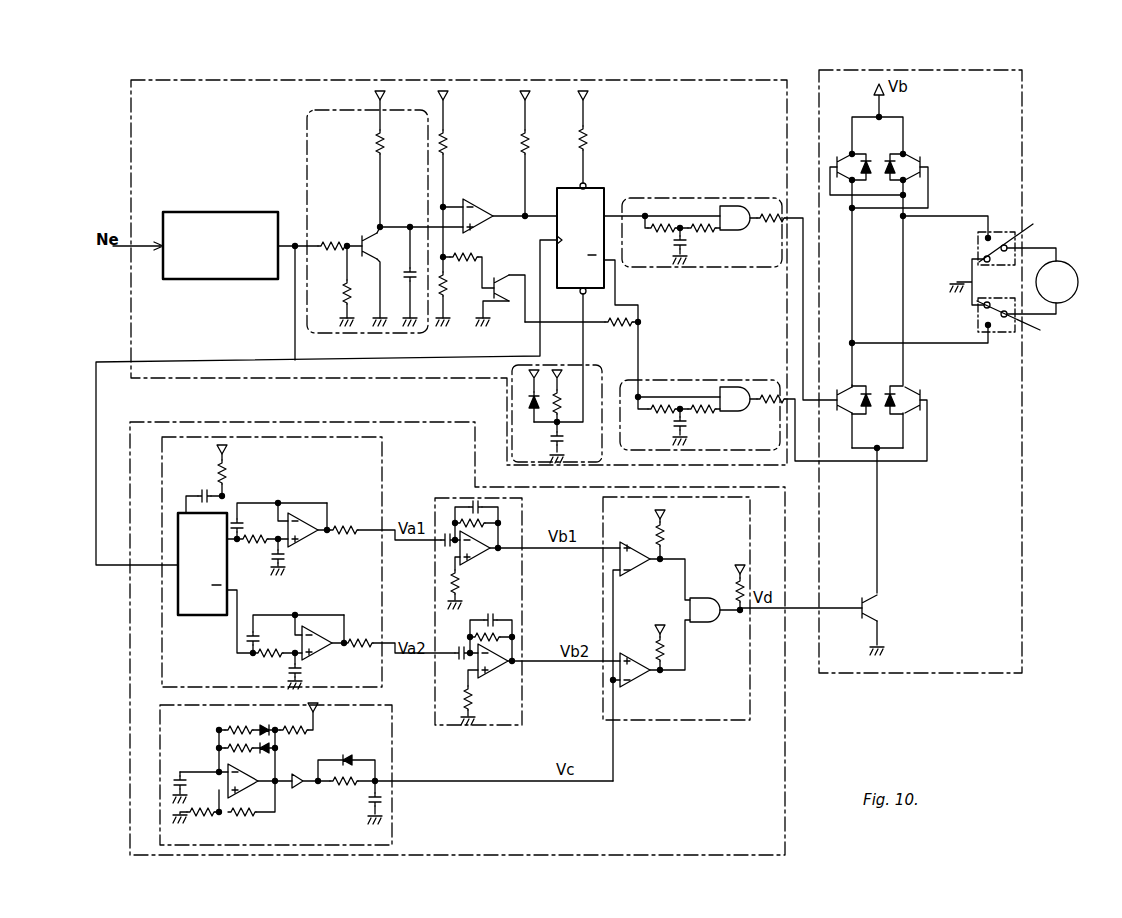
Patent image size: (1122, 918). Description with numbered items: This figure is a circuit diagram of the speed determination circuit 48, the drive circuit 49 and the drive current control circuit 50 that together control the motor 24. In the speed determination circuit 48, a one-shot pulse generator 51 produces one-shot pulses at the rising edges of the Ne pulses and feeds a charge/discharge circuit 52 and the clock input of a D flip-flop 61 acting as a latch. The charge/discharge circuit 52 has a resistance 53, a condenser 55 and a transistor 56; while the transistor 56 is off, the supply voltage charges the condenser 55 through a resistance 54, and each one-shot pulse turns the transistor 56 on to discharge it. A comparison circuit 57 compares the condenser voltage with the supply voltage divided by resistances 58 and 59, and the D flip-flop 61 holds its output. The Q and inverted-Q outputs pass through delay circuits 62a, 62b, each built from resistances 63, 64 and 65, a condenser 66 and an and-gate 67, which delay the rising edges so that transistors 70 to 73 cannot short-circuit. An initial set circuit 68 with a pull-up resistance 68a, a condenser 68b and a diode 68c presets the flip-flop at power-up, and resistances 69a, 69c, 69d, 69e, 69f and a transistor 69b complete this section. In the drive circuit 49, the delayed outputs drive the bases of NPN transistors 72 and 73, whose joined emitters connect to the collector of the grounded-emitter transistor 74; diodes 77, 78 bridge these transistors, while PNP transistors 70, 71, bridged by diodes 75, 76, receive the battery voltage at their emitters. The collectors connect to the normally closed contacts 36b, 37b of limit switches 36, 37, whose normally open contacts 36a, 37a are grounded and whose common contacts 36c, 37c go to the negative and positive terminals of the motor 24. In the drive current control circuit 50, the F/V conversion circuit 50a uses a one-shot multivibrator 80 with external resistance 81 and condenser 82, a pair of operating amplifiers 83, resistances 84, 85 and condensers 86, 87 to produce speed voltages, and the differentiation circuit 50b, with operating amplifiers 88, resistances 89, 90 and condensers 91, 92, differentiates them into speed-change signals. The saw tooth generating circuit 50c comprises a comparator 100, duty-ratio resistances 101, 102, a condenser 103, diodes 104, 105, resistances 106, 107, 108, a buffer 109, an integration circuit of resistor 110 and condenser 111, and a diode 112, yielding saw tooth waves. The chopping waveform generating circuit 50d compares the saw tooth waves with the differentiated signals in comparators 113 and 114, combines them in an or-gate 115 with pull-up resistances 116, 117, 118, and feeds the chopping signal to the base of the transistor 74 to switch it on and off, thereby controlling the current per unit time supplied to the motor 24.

The speed determination circuit 48 is at (224, 80).
The drive circuit 49 is at (958, 70).
The drive current control circuit 50 is at (128, 675).
The F/V conversion circuit 50a is at (384, 467).
The differentiation circuit 50b is at (525, 513).
The saw tooth generating circuit 50c is at (395, 829).
The chopping waveform generating circuit 50d is at (683, 720).
The one-shot pulse generator 51 is at (222, 212).
The charge/discharge circuit 52 is at (304, 150).
The resistance 53 is at (327, 243).
The resistance 54 is at (375, 142).
The condenser 55 is at (405, 280).
The transistor 56 is at (368, 276).
The comparison circuit 57 is at (485, 212).
The resistance 58 is at (444, 142).
The resistance 59 is at (449, 282).
The D flip-flop circuit 61 is at (552, 196).
The delay circuit 62a is at (695, 198).
The delay circuit 62b is at (712, 380).
The resistance 63 is at (657, 240).
The resistance 64 is at (700, 236).
The resistance 65 is at (767, 228).
The condenser 66 is at (684, 250).
The and-gate 67 is at (734, 232).
The initial set circuit 68 is at (534, 364).
The pull-up resistance 68a is at (565, 400).
The condenser 68b is at (560, 420).
The diode 68c is at (522, 418).
The resistance 69a is at (616, 330).
The transistor 69b is at (505, 312).
The resistance 69c is at (464, 258).
The resistance 69d is at (522, 143).
The resistance 69e is at (342, 294).
The resistance 69f is at (590, 142).
The PNP transistor 70 is at (834, 158).
The PNP transistor 71 is at (922, 158).
The NPN transistor 72 is at (840, 412).
The NPN transistor 73 is at (922, 393).
The transistor 74 is at (857, 618).
The diode 75 is at (865, 158).
The diode 76 is at (890, 163).
The diode 77 is at (870, 410).
The diode 78 is at (888, 410).
The one-shot multivibrator 80 is at (205, 616).
The external resistance 81 is at (230, 482).
The condenser 82 is at (202, 488).
The operating amplifiers 83 is at (311, 542).
The resistance 84 is at (254, 546).
The resistance 85 is at (344, 522).
The condenser 86 is at (242, 536).
The condenser 87 is at (284, 548).
The operating amplifiers 88 is at (486, 556).
The resistance 89 is at (460, 582).
The resistance 90 is at (490, 527).
The condenser 91 is at (474, 500).
The condenser 92 is at (447, 548).
The comparator 100 is at (260, 784).
The resistance 101 is at (236, 726).
The resistance 102 is at (219, 748).
The condenser 103 is at (179, 776).
The diode 104 is at (264, 725).
The diode 105 is at (262, 756).
The resistance 106 is at (290, 734).
The resistance 107 is at (244, 818).
The resistance 108 is at (202, 818).
The buffer 109 is at (298, 790).
The resistor 110 is at (345, 786).
The condenser 111 is at (380, 796).
The diode 112 is at (345, 757).
The comparator 113 is at (636, 541).
The comparator 114 is at (636, 654).
The or-gate 115 is at (708, 625).
The pull-up resistance 116 is at (668, 535).
The pull-up resistance 117 is at (668, 650).
The pull-up resistance 118 is at (737, 592).
The motor 24 is at (1070, 268).
The limit switch 36 is at (1002, 334).
The normally open contact 36a is at (989, 302).
The normally closed contact 36b is at (977, 328).
The common contact 36c is at (1026, 322).
The limit switch 37 is at (1003, 232).
The normally open contact 37a is at (977, 262).
The normally closed contact 37b is at (985, 238).
The common contact 37c is at (1026, 240).